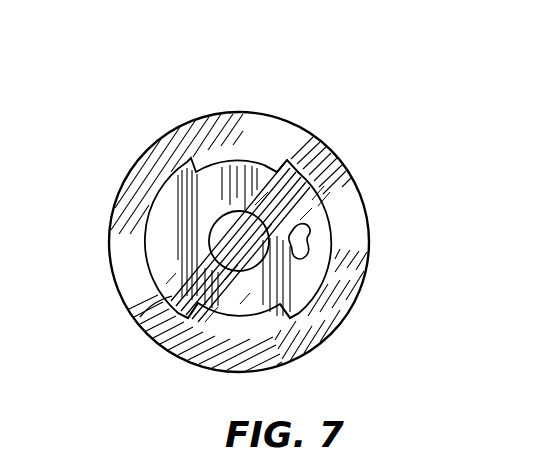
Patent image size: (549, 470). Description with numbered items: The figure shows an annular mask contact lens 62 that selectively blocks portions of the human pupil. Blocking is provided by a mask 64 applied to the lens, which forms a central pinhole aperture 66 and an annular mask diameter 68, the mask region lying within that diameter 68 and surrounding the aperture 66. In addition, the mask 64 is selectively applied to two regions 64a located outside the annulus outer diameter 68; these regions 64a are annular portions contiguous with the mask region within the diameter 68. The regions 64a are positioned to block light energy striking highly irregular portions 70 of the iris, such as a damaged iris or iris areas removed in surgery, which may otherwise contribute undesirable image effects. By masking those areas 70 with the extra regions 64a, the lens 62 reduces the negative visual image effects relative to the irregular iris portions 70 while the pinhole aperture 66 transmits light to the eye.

The contact lens 62 is at (184, 114).
The mask 64 is at (167, 222).
The regions 64a is at (140, 317).
The pinhole aperture 66 is at (217, 240).
The annular mask diameter 68 is at (264, 169).
The highly irregular portions of the iris 70 is at (306, 240).